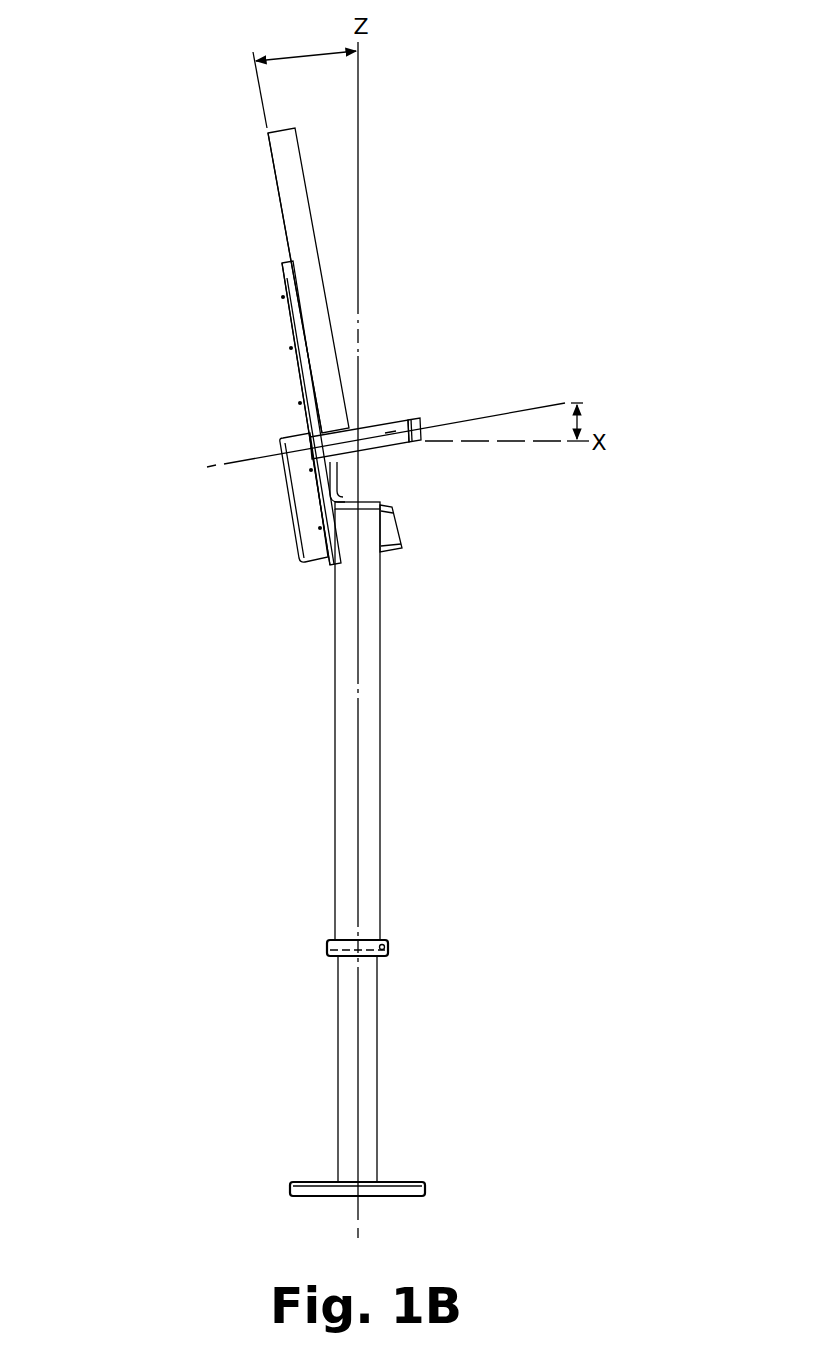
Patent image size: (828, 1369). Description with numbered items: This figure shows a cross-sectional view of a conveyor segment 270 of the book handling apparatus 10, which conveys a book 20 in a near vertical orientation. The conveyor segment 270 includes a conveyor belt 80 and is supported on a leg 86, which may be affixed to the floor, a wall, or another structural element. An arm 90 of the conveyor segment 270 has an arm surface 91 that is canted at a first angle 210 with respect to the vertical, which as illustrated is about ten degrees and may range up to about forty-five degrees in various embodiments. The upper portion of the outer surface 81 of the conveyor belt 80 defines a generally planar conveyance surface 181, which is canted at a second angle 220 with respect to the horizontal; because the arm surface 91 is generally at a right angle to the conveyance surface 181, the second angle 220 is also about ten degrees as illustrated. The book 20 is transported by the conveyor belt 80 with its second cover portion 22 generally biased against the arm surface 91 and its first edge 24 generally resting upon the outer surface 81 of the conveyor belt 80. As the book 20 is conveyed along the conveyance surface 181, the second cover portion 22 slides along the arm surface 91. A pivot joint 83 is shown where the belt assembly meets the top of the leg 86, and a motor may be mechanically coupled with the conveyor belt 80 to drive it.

The display support system 10 is at (504, 147).
The book 20 is at (290, 152).
The second cover portion 22 is at (277, 200).
The first edge 24 is at (331, 485).
The conveyor belt 80 is at (380, 417).
The outer surface 81 is at (413, 410).
The pivot joint 83 is at (372, 446).
The leg 86 is at (368, 660).
The arm 90 is at (297, 380).
The arm surface 91 is at (295, 277).
The conveyance surface 181 is at (366, 420).
The first angle 210 is at (309, 53).
The second angle 220 is at (582, 422).
The conveyor segment 270 is at (191, 260).